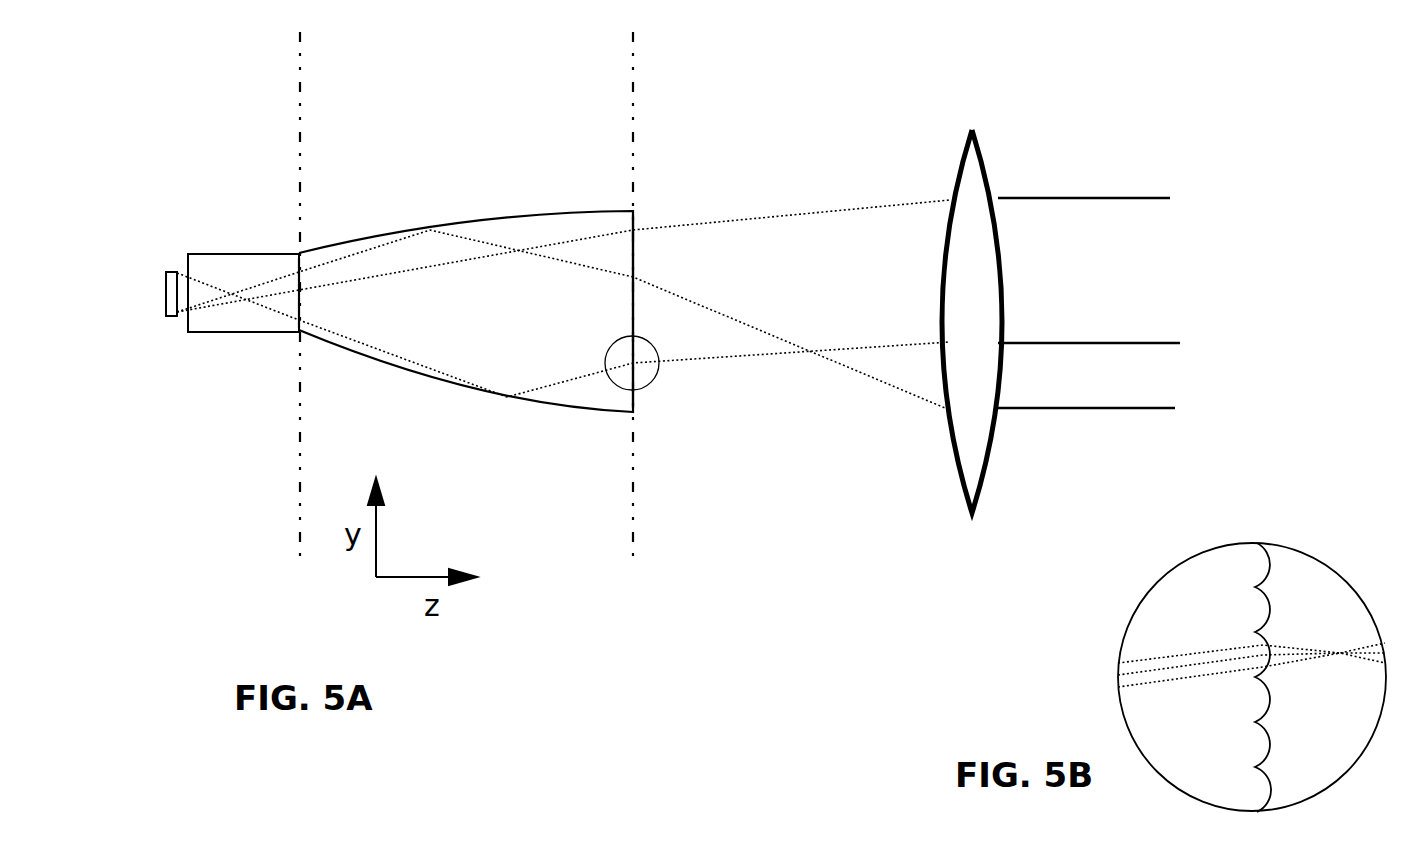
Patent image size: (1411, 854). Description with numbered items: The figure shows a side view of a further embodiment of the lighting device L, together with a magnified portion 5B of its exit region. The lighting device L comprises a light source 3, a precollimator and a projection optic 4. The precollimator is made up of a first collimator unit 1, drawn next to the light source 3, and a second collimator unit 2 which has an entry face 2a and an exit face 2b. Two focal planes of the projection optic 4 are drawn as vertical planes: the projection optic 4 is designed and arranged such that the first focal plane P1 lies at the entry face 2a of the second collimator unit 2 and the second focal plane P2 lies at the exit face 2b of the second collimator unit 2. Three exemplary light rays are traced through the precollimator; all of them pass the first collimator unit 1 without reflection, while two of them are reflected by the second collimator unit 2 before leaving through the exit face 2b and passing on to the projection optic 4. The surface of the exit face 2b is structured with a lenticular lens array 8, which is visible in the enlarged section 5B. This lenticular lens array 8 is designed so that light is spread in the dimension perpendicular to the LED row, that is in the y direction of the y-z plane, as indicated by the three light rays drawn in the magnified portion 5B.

In FIG. 5A, the first collimator unit 1 is at (241, 253).
In FIG. 5A, the second collimator unit 2 is at (441, 228).
In FIG. 5A, the entry face 2a is at (299, 302).
In FIG. 5A, the exit face 2b is at (633, 312).
In FIG. 5A, the light source 3 is at (173, 271).
In FIG. 5A, the projection optic 4 is at (950, 172).
In FIG. 5A, the magnified portion 5B is at (652, 380).
In FIG. 5B, the lenticular lens array 8 is at (1298, 704).
In FIG. 5A, the lighting device L is at (1078, 298).
In FIG. 5A, the first focal plane P1 is at (300, 83).
In FIG. 5A, the second focal plane P2 is at (633, 83).